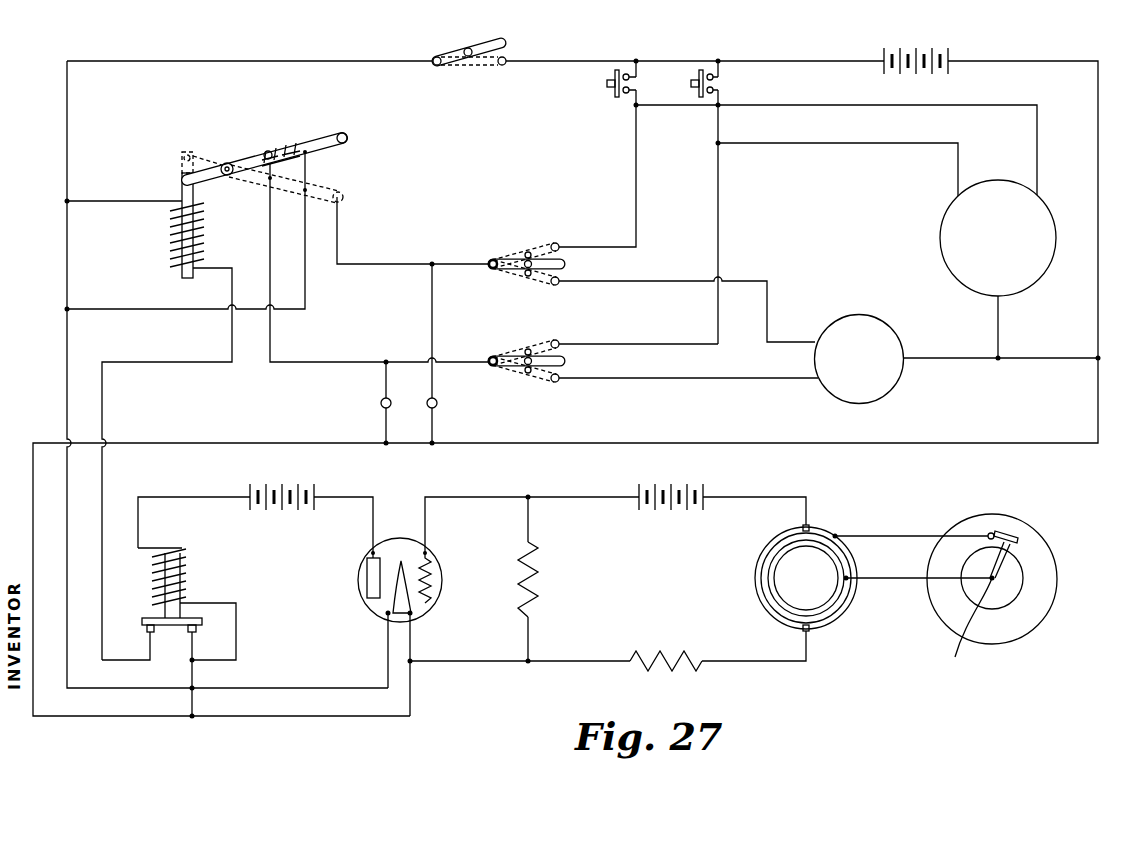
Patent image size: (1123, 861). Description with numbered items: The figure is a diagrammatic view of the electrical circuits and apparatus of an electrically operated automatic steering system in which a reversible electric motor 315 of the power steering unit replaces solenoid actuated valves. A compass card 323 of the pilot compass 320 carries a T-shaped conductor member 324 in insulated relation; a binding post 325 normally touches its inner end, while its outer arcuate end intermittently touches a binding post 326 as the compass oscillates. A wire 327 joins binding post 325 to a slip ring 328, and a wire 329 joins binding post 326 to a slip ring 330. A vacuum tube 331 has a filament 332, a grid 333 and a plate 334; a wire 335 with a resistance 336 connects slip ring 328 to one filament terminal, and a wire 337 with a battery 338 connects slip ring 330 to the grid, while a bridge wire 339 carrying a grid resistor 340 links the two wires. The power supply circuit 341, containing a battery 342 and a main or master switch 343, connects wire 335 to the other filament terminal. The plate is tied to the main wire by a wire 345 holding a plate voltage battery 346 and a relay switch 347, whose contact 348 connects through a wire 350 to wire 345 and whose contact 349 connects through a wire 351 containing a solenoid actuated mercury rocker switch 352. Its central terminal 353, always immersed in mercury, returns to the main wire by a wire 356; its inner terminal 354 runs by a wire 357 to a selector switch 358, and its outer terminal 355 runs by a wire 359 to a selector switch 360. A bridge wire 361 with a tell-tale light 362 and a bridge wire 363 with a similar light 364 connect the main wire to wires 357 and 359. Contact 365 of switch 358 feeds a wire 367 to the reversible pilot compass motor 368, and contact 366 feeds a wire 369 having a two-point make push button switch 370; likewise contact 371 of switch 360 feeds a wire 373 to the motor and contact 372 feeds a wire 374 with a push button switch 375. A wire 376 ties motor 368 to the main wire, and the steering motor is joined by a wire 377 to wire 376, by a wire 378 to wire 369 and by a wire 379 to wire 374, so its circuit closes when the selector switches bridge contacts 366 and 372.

The reversible electric motor 315 is at (940, 231).
The pilot compass 320 is at (1015, 603).
The compass card 323 is at (1030, 631).
The T-shaped conductor member 324 is at (1003, 566).
The binding post 325 is at (956, 655).
The binding post 326 is at (994, 530).
The wire 327 is at (894, 582).
The slip ring 328 is at (820, 620).
The wire 329 is at (884, 534).
The slip ring 330 is at (811, 527).
The vacuum tube 331 is at (430, 612).
The filament 332 is at (392, 560).
The grid 333 is at (437, 575).
The plate 334 is at (366, 577).
The wire 335 is at (572, 663).
The resistance 336 is at (676, 672).
The wire 337 is at (556, 496).
The battery 338 is at (680, 483).
The bridge wire 339 is at (531, 518).
The grid resistor 340 is at (542, 578).
The power supply circuit 341 is at (763, 61).
The battery 342 is at (922, 54).
The main or master switch 343 is at (447, 50).
The wire 345 is at (197, 496).
The plate voltage battery 346 is at (287, 484).
The relay switch 347 is at (196, 582).
The contact 348 is at (196, 630).
The contact 349 is at (147, 629).
The wire 350 is at (191, 647).
The wire 351 is at (107, 200).
The solenoid actuated mercury rocker switch 352 is at (243, 157).
The central terminal 353 is at (306, 148).
The inner terminal 354 is at (268, 150).
The outer terminal 355 is at (343, 135).
The wire 356 is at (170, 316).
The wire 357 is at (316, 362).
The selector switch 358 is at (508, 355).
The wire 359 is at (382, 264).
The selector switch 360 is at (506, 256).
The bridge wire 361 is at (383, 366).
The indicator or tell-tale light 362 is at (381, 404).
The bridge wire 363 is at (428, 303).
The light 364 is at (438, 403).
The contact 365 is at (553, 384).
The contact 366 is at (560, 343).
The wire 367 is at (700, 379).
The reversible pilot compass motor 368 is at (899, 381).
The wire 369 is at (720, 220).
The two-point make push button switch 370 is at (691, 84).
The contact 371 is at (554, 285).
The contact 372 is at (560, 246).
The wire 373 is at (652, 280).
The wire 374 is at (633, 172).
The two-point make push button switch 375 is at (607, 83).
The wire 376 is at (1030, 360).
The wire 377 is at (996, 323).
The wire 378 is at (860, 145).
The wire 379 is at (852, 107).